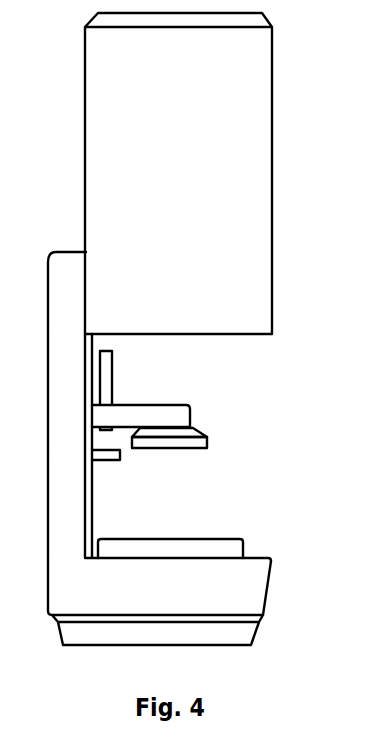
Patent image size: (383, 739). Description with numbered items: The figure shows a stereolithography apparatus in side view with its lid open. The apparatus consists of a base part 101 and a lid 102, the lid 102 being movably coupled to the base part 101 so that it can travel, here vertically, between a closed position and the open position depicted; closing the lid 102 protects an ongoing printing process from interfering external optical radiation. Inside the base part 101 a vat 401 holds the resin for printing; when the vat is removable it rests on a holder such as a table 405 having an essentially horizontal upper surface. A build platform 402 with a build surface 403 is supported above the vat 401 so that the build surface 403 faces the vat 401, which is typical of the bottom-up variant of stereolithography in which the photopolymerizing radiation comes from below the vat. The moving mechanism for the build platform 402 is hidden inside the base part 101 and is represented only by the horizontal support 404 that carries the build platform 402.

The base part 101 is at (263, 588).
The lid 102 is at (263, 193).
The vat 401 is at (230, 542).
The build platform 402 is at (207, 438).
The build surface 403 is at (184, 452).
The horizontal support 404 is at (183, 407).
The table 405 is at (263, 557).